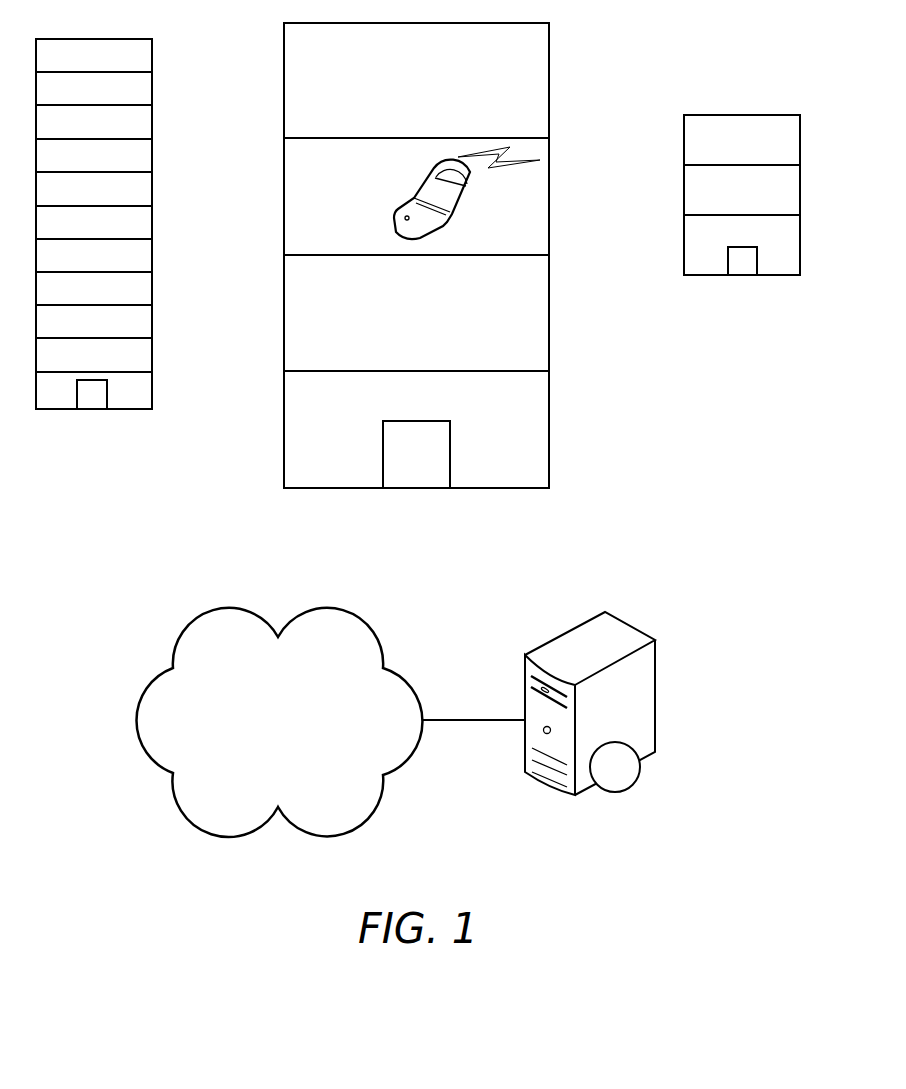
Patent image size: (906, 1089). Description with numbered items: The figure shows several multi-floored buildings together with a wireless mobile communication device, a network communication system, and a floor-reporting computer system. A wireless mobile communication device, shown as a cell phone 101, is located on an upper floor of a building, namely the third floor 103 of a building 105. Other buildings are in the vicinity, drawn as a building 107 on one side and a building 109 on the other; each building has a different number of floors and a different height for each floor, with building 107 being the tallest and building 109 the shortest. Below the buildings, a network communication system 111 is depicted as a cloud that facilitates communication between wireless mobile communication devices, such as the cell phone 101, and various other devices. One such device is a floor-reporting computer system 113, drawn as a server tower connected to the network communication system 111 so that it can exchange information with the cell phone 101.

The cell phone 101 is at (417, 199).
The third floor 103 is at (518, 244).
The building 105 is at (284, 93).
The building 107 is at (152, 184).
The building 109 is at (684, 197).
The network communication system 111 is at (232, 612).
The floor-reporting computer system 113 is at (566, 632).